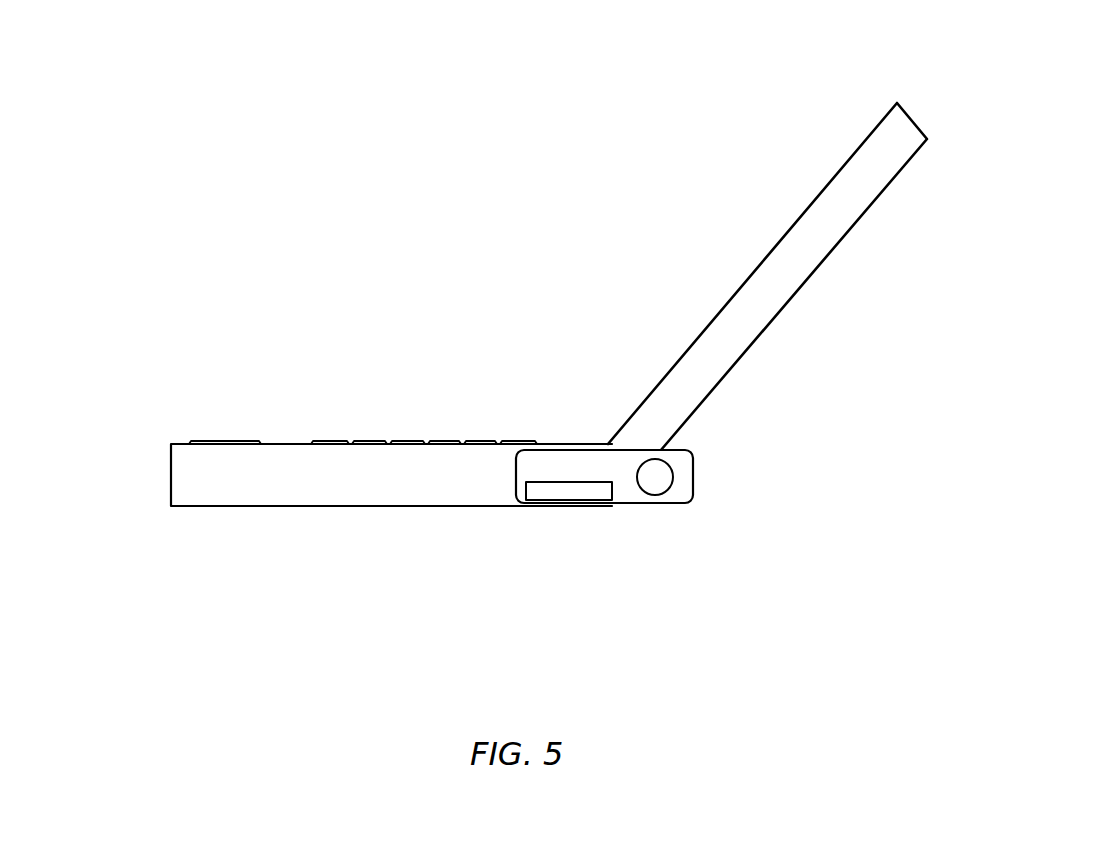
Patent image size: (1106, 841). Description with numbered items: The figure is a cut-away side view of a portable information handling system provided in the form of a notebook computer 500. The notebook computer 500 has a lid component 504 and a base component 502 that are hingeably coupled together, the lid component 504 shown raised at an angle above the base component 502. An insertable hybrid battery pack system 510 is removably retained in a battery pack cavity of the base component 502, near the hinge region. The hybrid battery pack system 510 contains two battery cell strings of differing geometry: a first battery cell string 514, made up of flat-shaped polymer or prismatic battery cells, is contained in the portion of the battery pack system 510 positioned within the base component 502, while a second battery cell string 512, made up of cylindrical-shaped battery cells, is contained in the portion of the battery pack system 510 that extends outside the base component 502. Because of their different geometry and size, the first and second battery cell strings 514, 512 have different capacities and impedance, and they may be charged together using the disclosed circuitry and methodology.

The notebook computer 500 is at (1007, 77).
The base component 502 is at (283, 505).
The lid component 504 is at (747, 352).
The hybrid battery pack system 510 is at (694, 472).
The second battery cell string 512 is at (657, 490).
The first battery cell string 514 is at (542, 490).